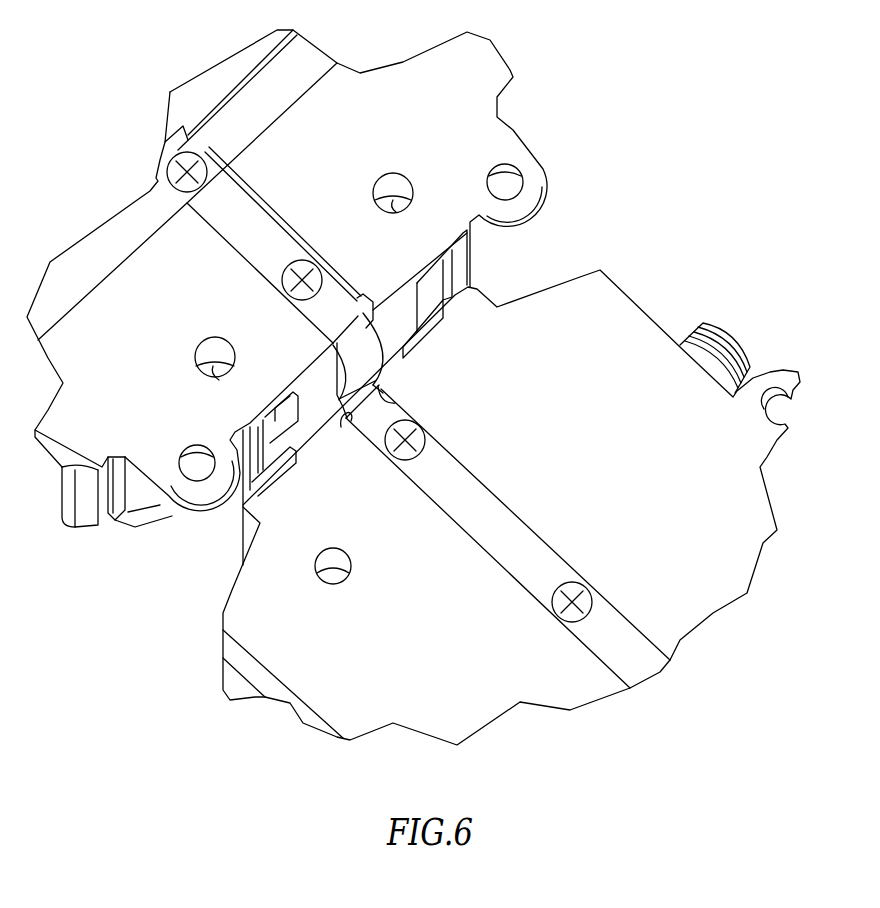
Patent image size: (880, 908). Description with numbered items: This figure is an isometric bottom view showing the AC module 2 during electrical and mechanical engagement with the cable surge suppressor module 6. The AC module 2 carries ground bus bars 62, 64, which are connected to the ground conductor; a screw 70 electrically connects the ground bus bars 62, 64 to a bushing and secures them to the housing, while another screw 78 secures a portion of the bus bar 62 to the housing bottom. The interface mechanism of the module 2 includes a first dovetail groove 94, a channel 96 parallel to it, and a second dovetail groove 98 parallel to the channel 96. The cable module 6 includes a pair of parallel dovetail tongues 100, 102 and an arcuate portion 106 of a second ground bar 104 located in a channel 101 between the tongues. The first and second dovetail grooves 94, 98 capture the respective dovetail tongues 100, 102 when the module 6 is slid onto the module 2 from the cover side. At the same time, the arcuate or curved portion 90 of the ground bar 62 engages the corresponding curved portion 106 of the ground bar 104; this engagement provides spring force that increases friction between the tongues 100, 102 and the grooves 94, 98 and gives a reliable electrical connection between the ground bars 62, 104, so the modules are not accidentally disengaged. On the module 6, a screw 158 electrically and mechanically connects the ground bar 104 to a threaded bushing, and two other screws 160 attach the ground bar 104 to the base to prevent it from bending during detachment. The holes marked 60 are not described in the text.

The AC module 2 is at (137, 396).
The cable surge suppressor module 6 is at (614, 459).
The mounting holes 60 is at (393, 186).
The ground bus bar 62 is at (255, 213).
The ground bus bar 64 is at (293, 95).
The screw 70 is at (167, 172).
The screw 78 is at (285, 290).
The arcuate portion of ground bar 90 is at (350, 370).
The first dovetail groove 94 is at (280, 413).
The channel 96 is at (367, 300).
The second dovetail groove 98 is at (438, 271).
The dovetail tongue 100 is at (277, 467).
The channel 101 is at (392, 401).
The dovetail tongue 102 is at (433, 320).
The second ground bar 104 is at (487, 540).
The arcuate portion of ground bar 106 is at (343, 428).
The screw 158 is at (555, 603).
The screw 160 is at (405, 461).